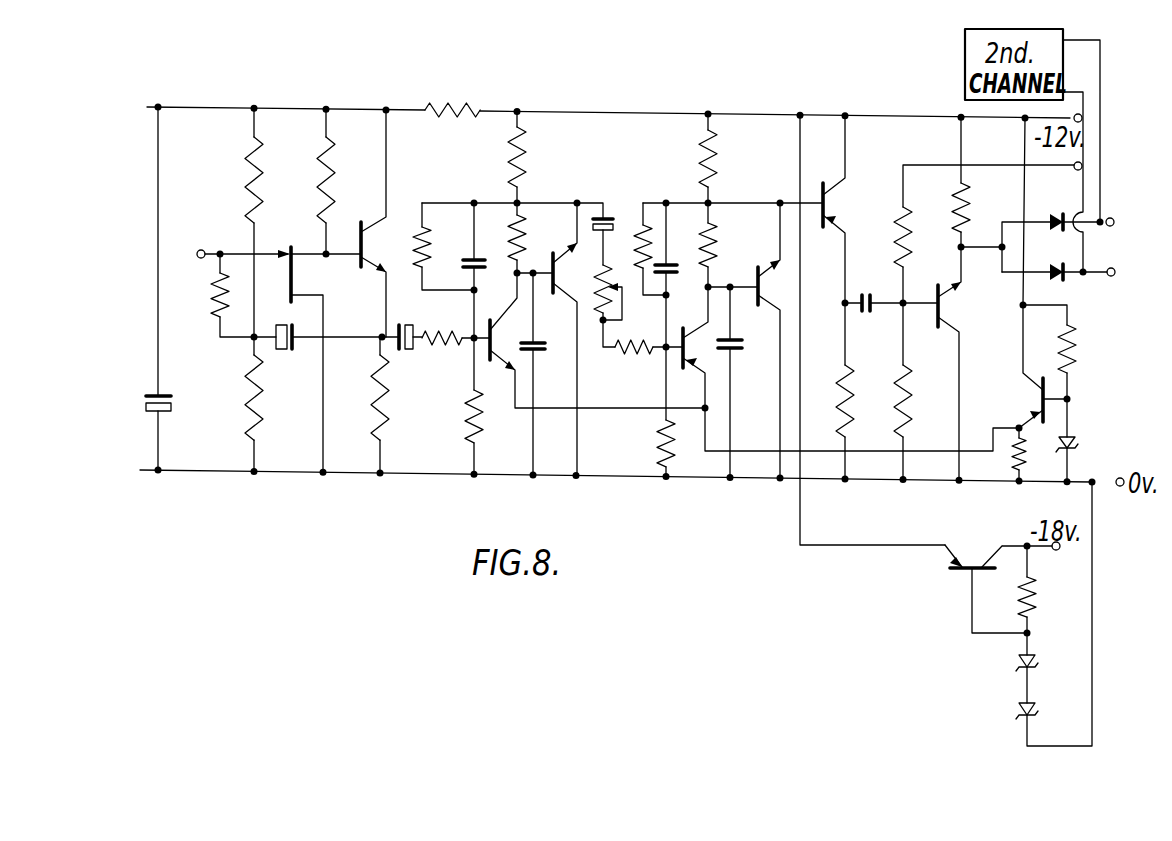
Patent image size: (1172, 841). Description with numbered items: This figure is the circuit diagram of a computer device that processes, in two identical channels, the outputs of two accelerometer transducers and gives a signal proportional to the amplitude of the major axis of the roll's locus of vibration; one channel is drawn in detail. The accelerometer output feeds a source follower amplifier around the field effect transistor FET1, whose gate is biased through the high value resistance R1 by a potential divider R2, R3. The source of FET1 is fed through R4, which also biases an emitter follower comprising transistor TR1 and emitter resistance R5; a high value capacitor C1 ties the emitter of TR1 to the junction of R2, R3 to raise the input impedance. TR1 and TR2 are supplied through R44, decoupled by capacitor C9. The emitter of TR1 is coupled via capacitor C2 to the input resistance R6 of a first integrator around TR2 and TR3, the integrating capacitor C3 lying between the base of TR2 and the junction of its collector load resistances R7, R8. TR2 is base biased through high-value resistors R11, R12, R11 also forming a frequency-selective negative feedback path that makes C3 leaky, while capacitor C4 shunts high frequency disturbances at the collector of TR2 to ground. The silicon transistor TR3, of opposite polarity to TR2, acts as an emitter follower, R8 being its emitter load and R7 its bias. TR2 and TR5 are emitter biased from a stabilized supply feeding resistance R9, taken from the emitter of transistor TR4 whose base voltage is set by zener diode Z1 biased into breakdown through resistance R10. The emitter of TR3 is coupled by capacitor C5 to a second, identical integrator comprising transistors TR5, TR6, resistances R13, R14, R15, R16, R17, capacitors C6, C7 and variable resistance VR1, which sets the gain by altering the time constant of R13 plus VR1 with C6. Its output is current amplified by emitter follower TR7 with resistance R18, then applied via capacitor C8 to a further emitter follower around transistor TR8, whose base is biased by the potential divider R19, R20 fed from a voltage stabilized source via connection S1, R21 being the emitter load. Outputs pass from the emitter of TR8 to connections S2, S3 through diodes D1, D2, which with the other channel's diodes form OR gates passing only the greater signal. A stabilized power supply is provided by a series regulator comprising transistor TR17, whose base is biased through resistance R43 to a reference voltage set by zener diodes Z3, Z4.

The capacitor C9 is at (176, 405).
The high value resistance R1 is at (234, 293).
The potential divider resistance R2 is at (272, 222).
The potential divider resistance R3 is at (272, 403).
The source resistance R4 is at (342, 181).
The emitter resistance R5 is at (395, 405).
The high value capacitor C1 is at (335, 352).
The coupling capacitor C2 is at (410, 355).
The field effect transistor FET1 is at (319, 359).
The emitter follower transistor TR1 is at (386, 225).
The input resistance R6 is at (456, 322).
The supply resistance R44 is at (452, 126).
The high-value base bias resistor R11 is at (443, 246).
The integrating capacitor C3 is at (484, 270).
The high-value base bias resistor R12 is at (495, 406).
The collector load resistance R8 is at (534, 157).
The bias resistance R7 is at (531, 240).
The integrator transistor TR2 is at (590, 340).
The capacitor C4 is at (543, 374).
The silicon transistor TR3 is at (577, 339).
The coupling capacitor C5 is at (613, 227).
The variable resistance VR1 is at (617, 303).
The input resistance R13 is at (648, 361).
The resistance R14 is at (649, 220).
The integrating capacitor C6 is at (676, 311).
The resistance R15 is at (644, 448).
The resistance R17 is at (731, 158).
The resistance R16 is at (730, 247).
The integrator transistor TR5 is at (700, 360).
The capacitor C7 is at (740, 382).
The integrator transistor TR6 is at (782, 340).
The emitter follower transistor TR7 is at (850, 209).
The coupling capacitor C8 is at (890, 286).
The resistance R18 is at (866, 391).
The potential divider resistance R19 is at (984, 234).
The potential divider resistance R20 is at (924, 391).
The emitter follower transistor TR8 is at (965, 363).
The emitter load R21 is at (983, 184).
The diode D1 is at (1051, 231).
The diode D2 is at (1054, 256).
The connection S1 is at (1069, 183).
The output connection S2 is at (1125, 223).
The output connection S3 is at (1126, 273).
The resistance R10 is at (1072, 354).
The transistor TR4 is at (1018, 405).
The zener diode Z1 is at (1082, 440).
The resistance R9 is at (1034, 454).
The series regulator transistor TR17 is at (1002, 577).
The resistance R43 is at (1049, 589).
The zener diode Z3 is at (1047, 668).
The zener diode Z4 is at (1047, 711).